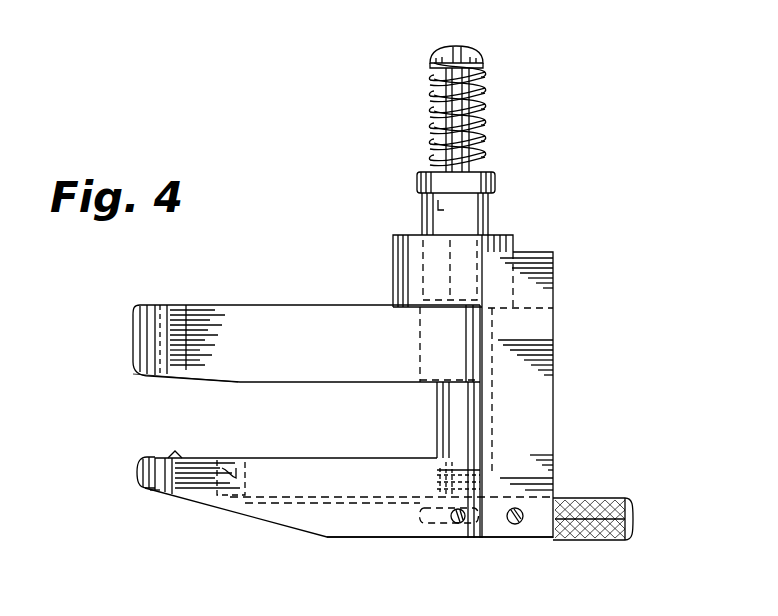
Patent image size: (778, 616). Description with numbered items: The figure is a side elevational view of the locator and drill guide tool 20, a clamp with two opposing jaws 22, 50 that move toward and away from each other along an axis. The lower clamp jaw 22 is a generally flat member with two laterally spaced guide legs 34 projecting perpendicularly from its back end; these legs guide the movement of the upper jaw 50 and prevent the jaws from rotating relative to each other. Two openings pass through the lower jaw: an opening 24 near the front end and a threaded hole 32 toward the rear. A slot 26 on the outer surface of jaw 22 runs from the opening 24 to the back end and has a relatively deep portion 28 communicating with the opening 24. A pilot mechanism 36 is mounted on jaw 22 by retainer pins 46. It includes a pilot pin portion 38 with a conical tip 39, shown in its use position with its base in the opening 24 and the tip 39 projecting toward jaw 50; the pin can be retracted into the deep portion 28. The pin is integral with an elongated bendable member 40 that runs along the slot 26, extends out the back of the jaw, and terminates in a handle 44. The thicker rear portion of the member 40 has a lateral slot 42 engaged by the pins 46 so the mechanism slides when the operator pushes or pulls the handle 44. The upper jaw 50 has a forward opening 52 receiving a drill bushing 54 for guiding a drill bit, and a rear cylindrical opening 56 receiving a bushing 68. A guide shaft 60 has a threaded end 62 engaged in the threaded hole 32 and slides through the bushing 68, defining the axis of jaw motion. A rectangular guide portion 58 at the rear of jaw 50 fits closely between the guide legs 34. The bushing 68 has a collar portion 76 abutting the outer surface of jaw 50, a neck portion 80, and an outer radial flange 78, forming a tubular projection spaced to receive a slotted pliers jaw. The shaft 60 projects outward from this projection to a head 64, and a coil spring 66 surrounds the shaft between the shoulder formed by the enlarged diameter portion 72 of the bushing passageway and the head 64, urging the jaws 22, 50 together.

The locator and drill guide tool 20 is at (288, 222).
The clamp jaw 22 is at (298, 458).
The opening 24 is at (152, 490).
The slot 26 is at (297, 515).
The relatively deep portion 28 is at (234, 465).
The threaded hole 32 is at (462, 488).
The guide legs 34 is at (545, 383).
The pilot mechanism 36 is at (412, 540).
The pilot pin portion 38 is at (190, 492).
The conical tip 39 is at (178, 452).
The elongated bendable member 40 is at (357, 505).
The slot 42 is at (496, 520).
The handle 44 is at (585, 498).
The retainer pins 46 is at (524, 518).
The jaw 50 is at (265, 305).
The opening 52 is at (172, 304).
The drill bushing 54 is at (218, 330).
The opening 56 is at (426, 340).
The rectangular guide portion 58 is at (488, 420).
The guide shaft 60 is at (436, 420).
The threaded end 62 is at (478, 490).
The head 64 is at (478, 56).
The coil spring 66 is at (484, 92).
The bushing 68 is at (508, 226).
The enlarged diameter portion 72 is at (420, 224).
The collar portion 76 is at (393, 268).
The outer radial flange 78 is at (498, 180).
The neck portion 80 is at (425, 203).